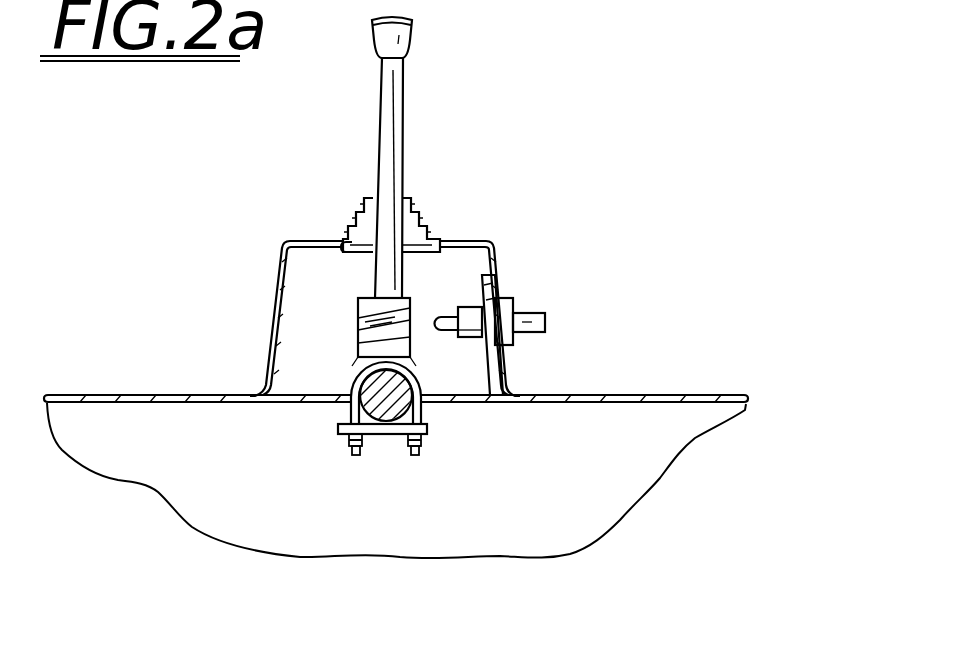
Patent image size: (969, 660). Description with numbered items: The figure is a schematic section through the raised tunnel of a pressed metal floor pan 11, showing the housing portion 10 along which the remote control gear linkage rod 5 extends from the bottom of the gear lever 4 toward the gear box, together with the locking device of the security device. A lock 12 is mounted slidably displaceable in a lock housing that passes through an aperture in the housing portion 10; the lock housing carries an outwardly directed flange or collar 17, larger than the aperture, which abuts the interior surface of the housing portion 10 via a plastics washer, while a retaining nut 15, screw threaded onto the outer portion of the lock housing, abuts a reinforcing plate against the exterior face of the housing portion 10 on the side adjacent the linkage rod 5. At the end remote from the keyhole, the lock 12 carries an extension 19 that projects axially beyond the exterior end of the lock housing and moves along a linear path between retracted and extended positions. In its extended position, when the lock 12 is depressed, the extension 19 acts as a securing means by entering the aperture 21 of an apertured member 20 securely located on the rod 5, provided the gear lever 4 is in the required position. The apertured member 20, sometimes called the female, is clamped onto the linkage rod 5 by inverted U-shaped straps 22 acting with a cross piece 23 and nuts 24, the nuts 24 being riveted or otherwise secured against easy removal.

The gear lever 4 is at (393, 154).
The remote control gear linkage rod 5 is at (388, 414).
The housing portion 10 is at (270, 288).
The floor pan 11 is at (176, 398).
The lock 12 is at (546, 334).
The retaining nut 15 is at (487, 343).
The flange or collar 17 is at (512, 300).
The extension 19 is at (447, 324).
The apertured member 20 is at (360, 352).
The aperture 21 is at (401, 323).
The inverted U-shaped straps 22 is at (351, 400).
The cross piece 23 is at (430, 430).
The nuts 24 is at (348, 446).